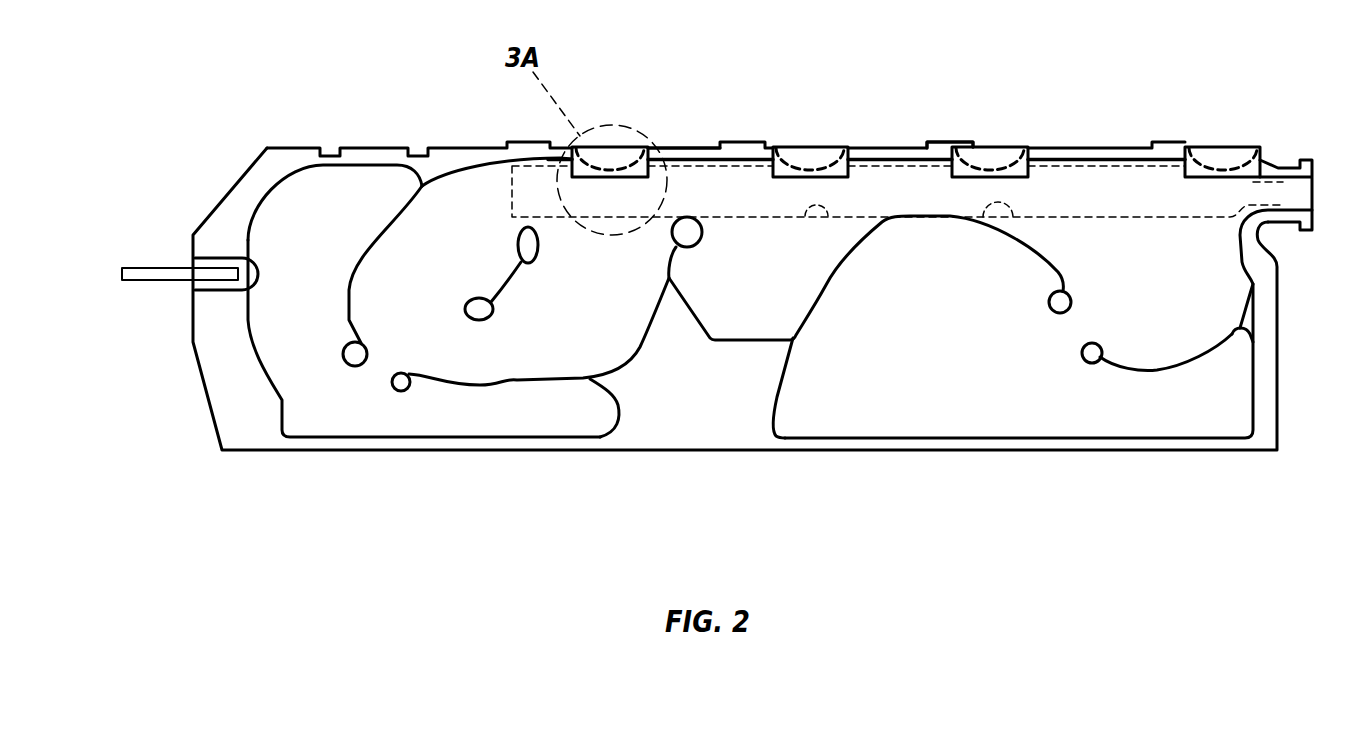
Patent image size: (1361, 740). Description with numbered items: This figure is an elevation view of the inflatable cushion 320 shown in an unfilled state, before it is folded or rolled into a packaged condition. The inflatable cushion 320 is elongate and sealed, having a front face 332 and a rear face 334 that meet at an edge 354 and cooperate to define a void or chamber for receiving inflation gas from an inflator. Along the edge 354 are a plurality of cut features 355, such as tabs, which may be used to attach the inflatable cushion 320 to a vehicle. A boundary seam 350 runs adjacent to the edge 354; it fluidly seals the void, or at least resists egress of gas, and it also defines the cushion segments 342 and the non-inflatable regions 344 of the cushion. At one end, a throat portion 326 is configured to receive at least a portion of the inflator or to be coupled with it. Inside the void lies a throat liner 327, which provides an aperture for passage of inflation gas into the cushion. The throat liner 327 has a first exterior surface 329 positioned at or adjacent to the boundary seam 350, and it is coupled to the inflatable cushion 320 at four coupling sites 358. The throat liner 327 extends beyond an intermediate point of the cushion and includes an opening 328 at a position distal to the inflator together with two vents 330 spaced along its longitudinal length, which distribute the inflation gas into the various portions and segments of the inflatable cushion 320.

The inflatable cushion 320 is at (1132, 82).
The throat portion 326 is at (1288, 148).
The throat liner 327 is at (1153, 192).
The opening 328 is at (512, 168).
The first exterior surface 329 is at (1077, 158).
The vents 330 is at (817, 222).
The front face 332 is at (902, 407).
The rear face 334 is at (1031, 381).
The cushion segments 342 is at (503, 352).
The non-inflatable regions 344 is at (677, 406).
The boundary seam 350 is at (745, 157).
The edge 354 is at (695, 147).
The cut features 355 is at (938, 146).
The coupling sites 358 is at (610, 130).